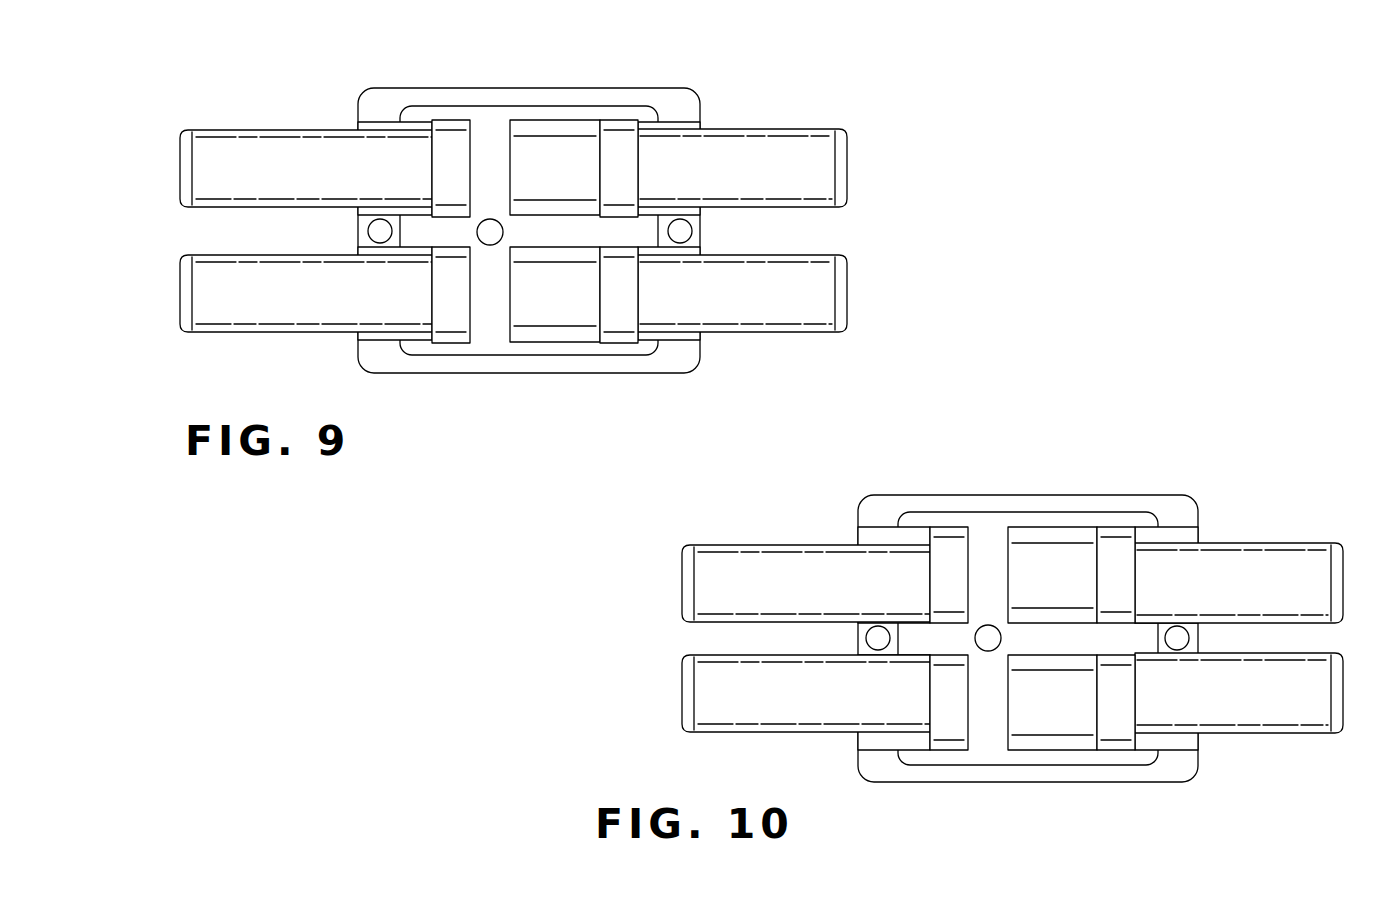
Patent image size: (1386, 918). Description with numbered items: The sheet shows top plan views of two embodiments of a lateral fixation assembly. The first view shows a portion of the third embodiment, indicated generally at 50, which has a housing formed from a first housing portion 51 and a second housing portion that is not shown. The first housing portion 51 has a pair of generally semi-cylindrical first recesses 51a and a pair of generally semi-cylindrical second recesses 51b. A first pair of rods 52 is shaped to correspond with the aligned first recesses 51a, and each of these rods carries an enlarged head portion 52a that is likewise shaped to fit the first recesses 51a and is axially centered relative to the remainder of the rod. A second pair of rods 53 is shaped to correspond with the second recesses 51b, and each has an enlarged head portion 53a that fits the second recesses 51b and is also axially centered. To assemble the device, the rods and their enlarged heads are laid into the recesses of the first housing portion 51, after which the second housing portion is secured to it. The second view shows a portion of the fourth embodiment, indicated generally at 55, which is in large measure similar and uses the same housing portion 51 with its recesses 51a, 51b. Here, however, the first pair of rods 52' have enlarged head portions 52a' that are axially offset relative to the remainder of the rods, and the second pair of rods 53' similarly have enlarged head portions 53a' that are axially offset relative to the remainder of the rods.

In FIG. 9, the lateral fixation assembly 50 is at (533, 238).
In FIG. 9, the first housing portion 51 is at (537, 92).
In FIG. 10, the first housing portion 51 is at (995, 500).
In FIG. 9, the first recesses 51a is at (372, 142).
In FIG. 10, the first recesses 51a is at (870, 545).
In FIG. 9, the second recesses 51b is at (577, 133).
In FIG. 9, the first pair of rods 52 is at (286, 234).
In FIG. 9, the enlarged head portion 52a is at (426, 242).
In FIG. 10, the enlarged head portion 52a is at (1059, 638).
In FIG. 9, the second pair of rods 53 is at (782, 230).
In FIG. 9, the enlarged head portion 53a is at (652, 234).
In FIG. 10, the lateral fixation assembly 55 is at (960, 602).
In FIG. 10, the first pair of rods 52' is at (753, 638).
In FIG. 10, the enlarged head portions 52a' is at (917, 636).
In FIG. 10, the second pair of rods 53' is at (1239, 642).
In FIG. 10, the enlarged head portions 53a' is at (1149, 632).